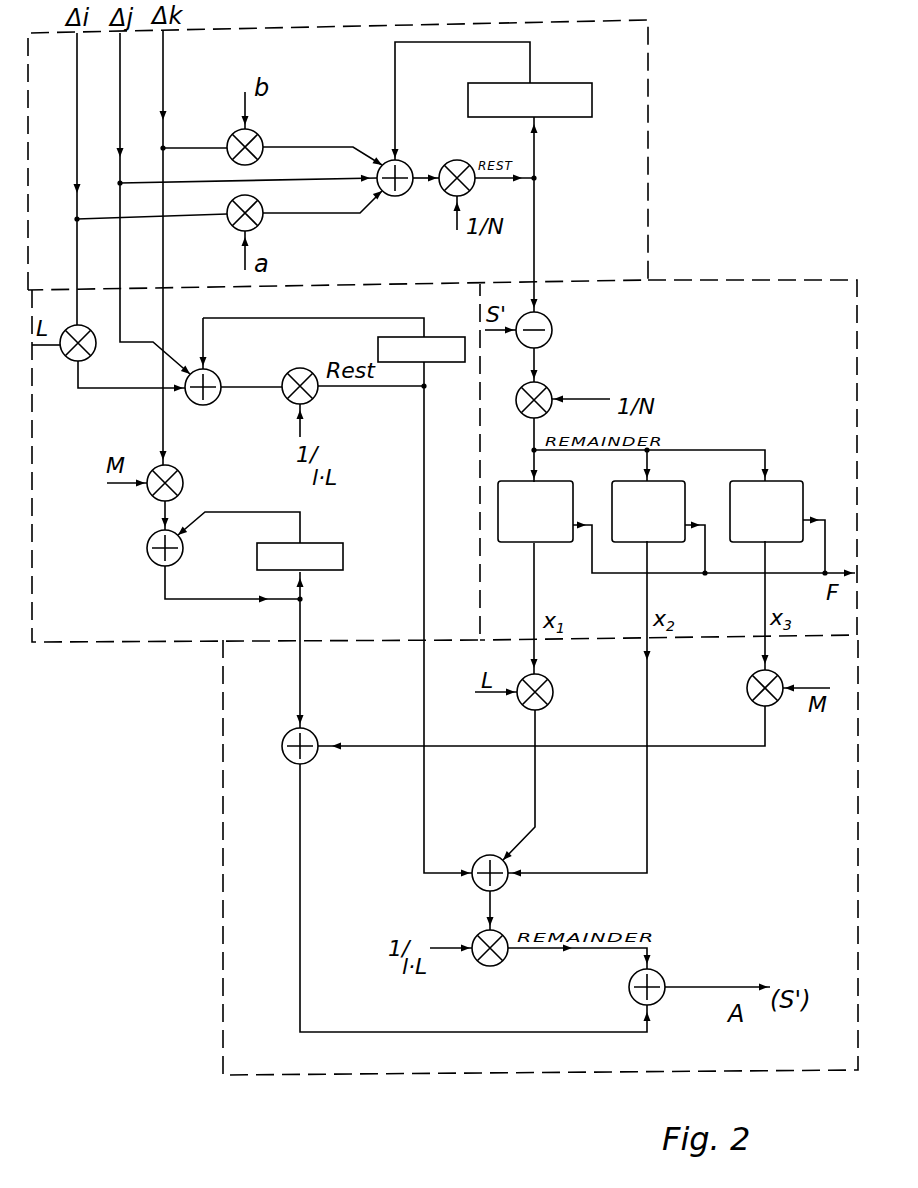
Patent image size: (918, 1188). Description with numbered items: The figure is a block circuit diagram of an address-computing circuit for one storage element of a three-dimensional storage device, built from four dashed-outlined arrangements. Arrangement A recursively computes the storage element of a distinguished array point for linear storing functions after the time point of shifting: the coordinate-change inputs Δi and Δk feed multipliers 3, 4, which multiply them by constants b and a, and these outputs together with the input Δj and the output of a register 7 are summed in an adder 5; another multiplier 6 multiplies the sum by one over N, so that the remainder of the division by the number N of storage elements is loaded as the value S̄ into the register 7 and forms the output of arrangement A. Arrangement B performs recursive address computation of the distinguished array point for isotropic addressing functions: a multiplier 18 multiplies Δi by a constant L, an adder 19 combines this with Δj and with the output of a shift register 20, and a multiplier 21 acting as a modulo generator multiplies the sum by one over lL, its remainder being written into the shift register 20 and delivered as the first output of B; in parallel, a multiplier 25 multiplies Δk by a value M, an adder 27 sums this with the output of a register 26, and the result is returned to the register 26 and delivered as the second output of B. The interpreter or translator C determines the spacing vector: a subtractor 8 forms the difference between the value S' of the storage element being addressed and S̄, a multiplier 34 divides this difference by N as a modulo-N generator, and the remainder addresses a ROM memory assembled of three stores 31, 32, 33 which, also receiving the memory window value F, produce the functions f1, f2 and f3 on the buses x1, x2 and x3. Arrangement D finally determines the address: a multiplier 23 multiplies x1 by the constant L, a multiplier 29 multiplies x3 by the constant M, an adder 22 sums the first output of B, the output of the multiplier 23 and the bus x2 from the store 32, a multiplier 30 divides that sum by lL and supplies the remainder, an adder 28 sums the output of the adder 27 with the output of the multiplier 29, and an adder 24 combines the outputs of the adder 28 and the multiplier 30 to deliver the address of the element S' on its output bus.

The multiplier 3 is at (258, 142).
The multiplier 4 is at (259, 219).
The adder 5 is at (403, 164).
The multiplier 6 is at (459, 163).
The register 7 is at (558, 95).
The subtractor 8 is at (548, 321).
The multiplier 18 is at (84, 334).
The adder 19 is at (211, 397).
The shift register 20 is at (434, 338).
The multiplier 21 is at (305, 373).
The adder 22 is at (487, 857).
The multiplier 23 is at (549, 703).
The adder 24 is at (633, 996).
The multiplier 25 is at (174, 472).
The register 26 is at (329, 547).
The adder 27 is at (150, 546).
The adder 28 is at (314, 736).
The multiplier 29 is at (752, 697).
The multiplier 30 is at (499, 933).
The store 31 is at (525, 489).
The store 32 is at (638, 493).
The store 33 is at (742, 503).
The multiplier 34 is at (548, 391).
The circuit arrangement A is at (650, 78).
The circuit arrangement B is at (62, 644).
The interpreter or translator C is at (788, 277).
The circuit arrangement D is at (222, 833).